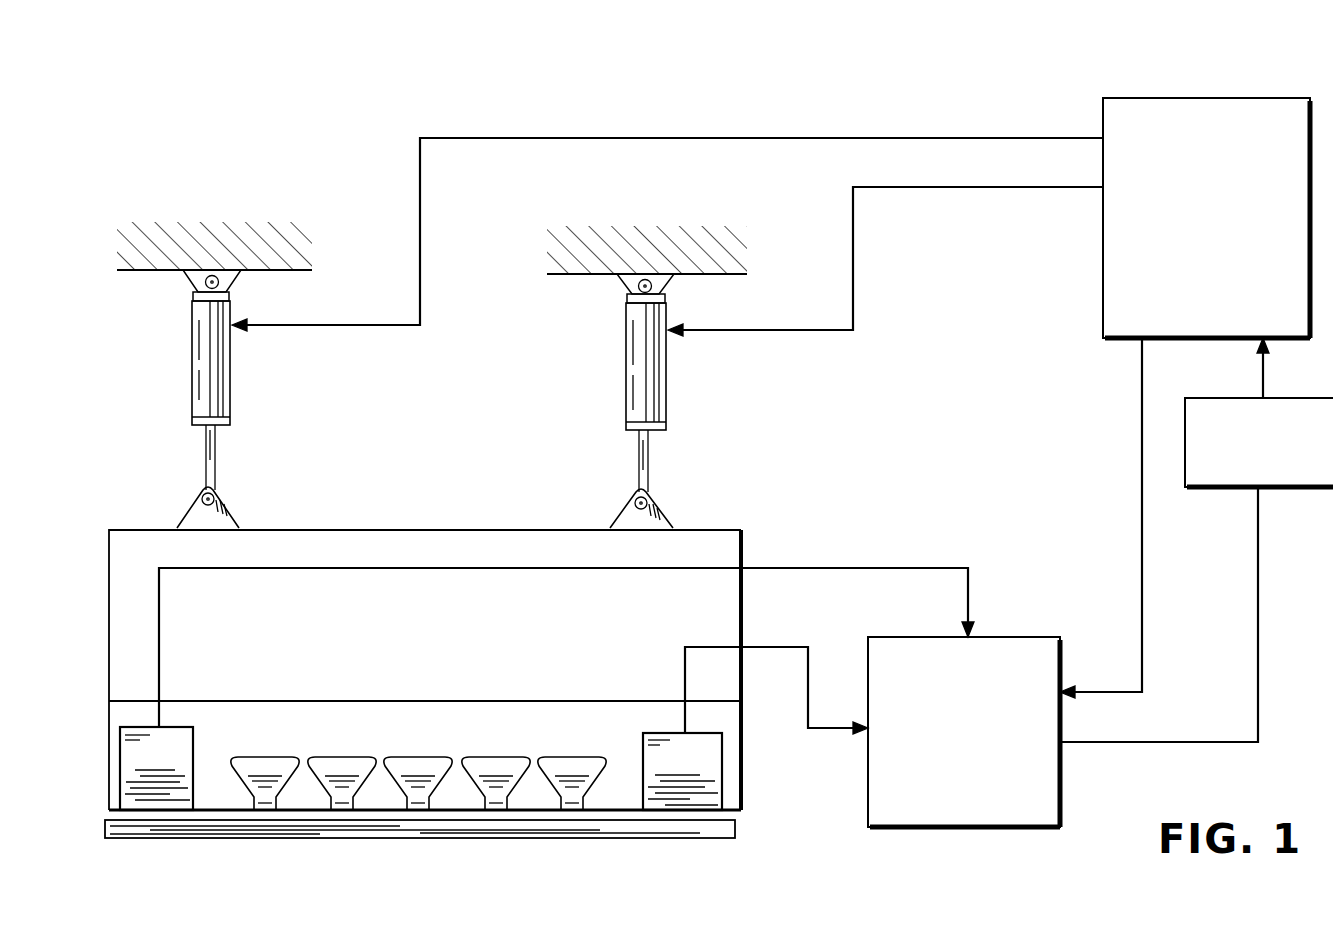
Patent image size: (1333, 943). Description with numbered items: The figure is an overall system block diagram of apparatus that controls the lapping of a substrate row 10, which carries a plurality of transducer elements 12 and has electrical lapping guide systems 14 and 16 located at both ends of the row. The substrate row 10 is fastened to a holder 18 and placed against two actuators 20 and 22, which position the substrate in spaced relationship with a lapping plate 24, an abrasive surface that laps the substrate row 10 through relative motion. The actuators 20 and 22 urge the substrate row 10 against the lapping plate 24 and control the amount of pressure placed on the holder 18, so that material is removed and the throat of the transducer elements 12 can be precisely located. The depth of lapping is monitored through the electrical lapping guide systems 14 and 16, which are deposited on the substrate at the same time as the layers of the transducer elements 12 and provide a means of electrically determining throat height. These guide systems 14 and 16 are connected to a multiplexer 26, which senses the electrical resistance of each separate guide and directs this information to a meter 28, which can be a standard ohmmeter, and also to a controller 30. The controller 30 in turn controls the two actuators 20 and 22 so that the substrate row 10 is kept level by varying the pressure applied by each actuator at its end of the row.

The substrate row 10 is at (756, 762).
The transducer elements 12 is at (262, 765).
The electrical lapping guide system 14 is at (155, 793).
The electrical lapping guide system 16 is at (672, 803).
The holder 18 is at (458, 548).
The actuator 20 is at (232, 388).
The actuator 22 is at (665, 392).
The lapping plate 24 is at (490, 833).
The multiplexer 26 is at (985, 830).
The meter 28 is at (1275, 490).
The controller 30 is at (1103, 258).